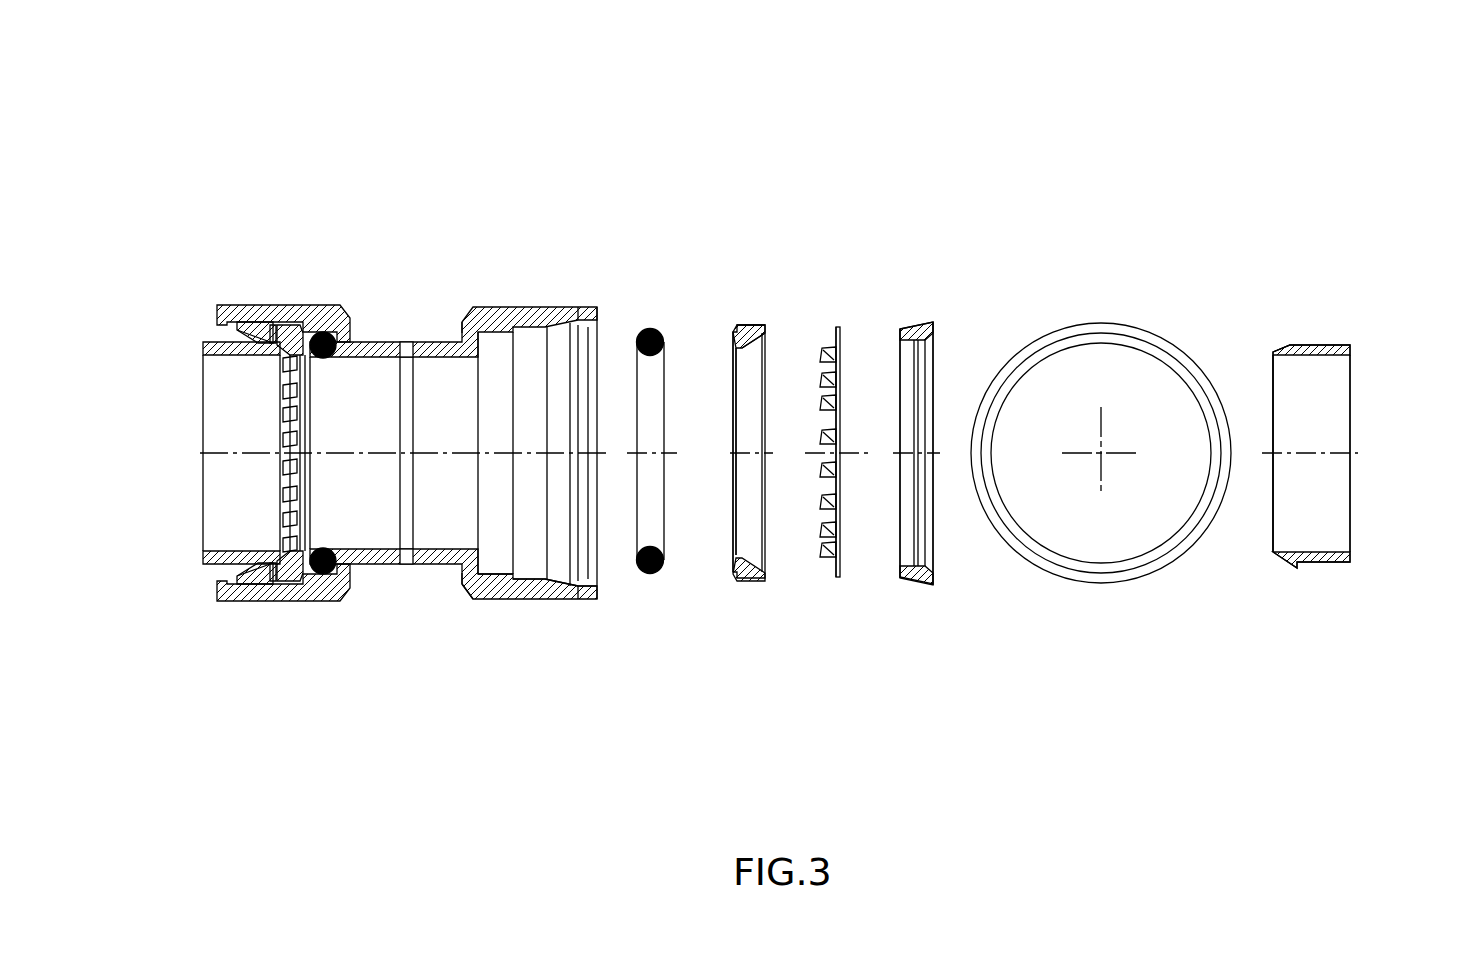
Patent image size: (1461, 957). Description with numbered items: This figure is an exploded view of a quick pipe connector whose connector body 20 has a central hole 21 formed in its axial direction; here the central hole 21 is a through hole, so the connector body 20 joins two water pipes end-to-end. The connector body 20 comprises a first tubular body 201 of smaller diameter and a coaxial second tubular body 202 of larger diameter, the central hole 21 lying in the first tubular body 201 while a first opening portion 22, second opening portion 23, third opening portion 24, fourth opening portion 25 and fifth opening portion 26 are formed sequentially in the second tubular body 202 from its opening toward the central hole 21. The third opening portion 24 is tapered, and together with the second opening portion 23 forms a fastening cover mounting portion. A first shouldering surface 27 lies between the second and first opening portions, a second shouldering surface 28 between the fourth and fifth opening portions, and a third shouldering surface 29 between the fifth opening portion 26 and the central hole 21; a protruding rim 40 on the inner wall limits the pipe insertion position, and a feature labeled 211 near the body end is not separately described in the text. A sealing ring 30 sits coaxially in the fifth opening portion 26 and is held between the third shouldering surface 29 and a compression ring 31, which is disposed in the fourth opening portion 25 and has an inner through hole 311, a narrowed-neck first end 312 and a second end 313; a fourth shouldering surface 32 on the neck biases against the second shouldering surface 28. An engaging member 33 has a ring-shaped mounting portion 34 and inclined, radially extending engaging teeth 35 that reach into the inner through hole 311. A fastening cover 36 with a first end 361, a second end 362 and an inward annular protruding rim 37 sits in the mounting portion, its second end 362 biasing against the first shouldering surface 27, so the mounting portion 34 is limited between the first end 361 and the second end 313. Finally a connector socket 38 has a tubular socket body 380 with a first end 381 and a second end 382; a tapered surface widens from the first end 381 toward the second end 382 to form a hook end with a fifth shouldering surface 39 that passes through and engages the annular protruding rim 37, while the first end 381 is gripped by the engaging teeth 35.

The connector body 20 is at (372, 337).
The central hole 21 is at (436, 376).
The first opening portion 22 is at (582, 578).
The second opening portion 23 is at (577, 568).
The third opening portion 24 is at (557, 558).
The fourth opening portion 25 is at (530, 562).
The fifth opening portion 26 is at (500, 553).
The first shouldering surface 27 is at (582, 330).
The second shouldering surface 28 is at (517, 327).
The third shouldering surface 29 is at (473, 598).
The sealing ring 30 is at (653, 573).
The compression ring 31 is at (758, 327).
The fourth shouldering surface 32 is at (738, 323).
The engaging member 33 is at (829, 454).
The mounting portion 34 is at (837, 327).
The engaging teeth 35 is at (828, 570).
The fastening cover 36 is at (1044, 399).
The annular protruding rim 37 is at (922, 585).
The connector socket 38 is at (1321, 449).
The fifth shouldering surface 39 is at (1296, 345).
The protruding rim 40 is at (406, 340).
The first tubular body 201 is at (430, 313).
The second tubular body 202 is at (235, 288).
The end face 211 is at (613, 592).
The inner through hole 311 is at (738, 438).
The first end 312 is at (723, 323).
The second end 313 is at (775, 338).
The first end 361 is at (892, 323).
The second end 362 is at (940, 342).
The socket body 380 is at (1338, 565).
The first end 381 is at (1267, 392).
The second end 382 is at (1358, 392).